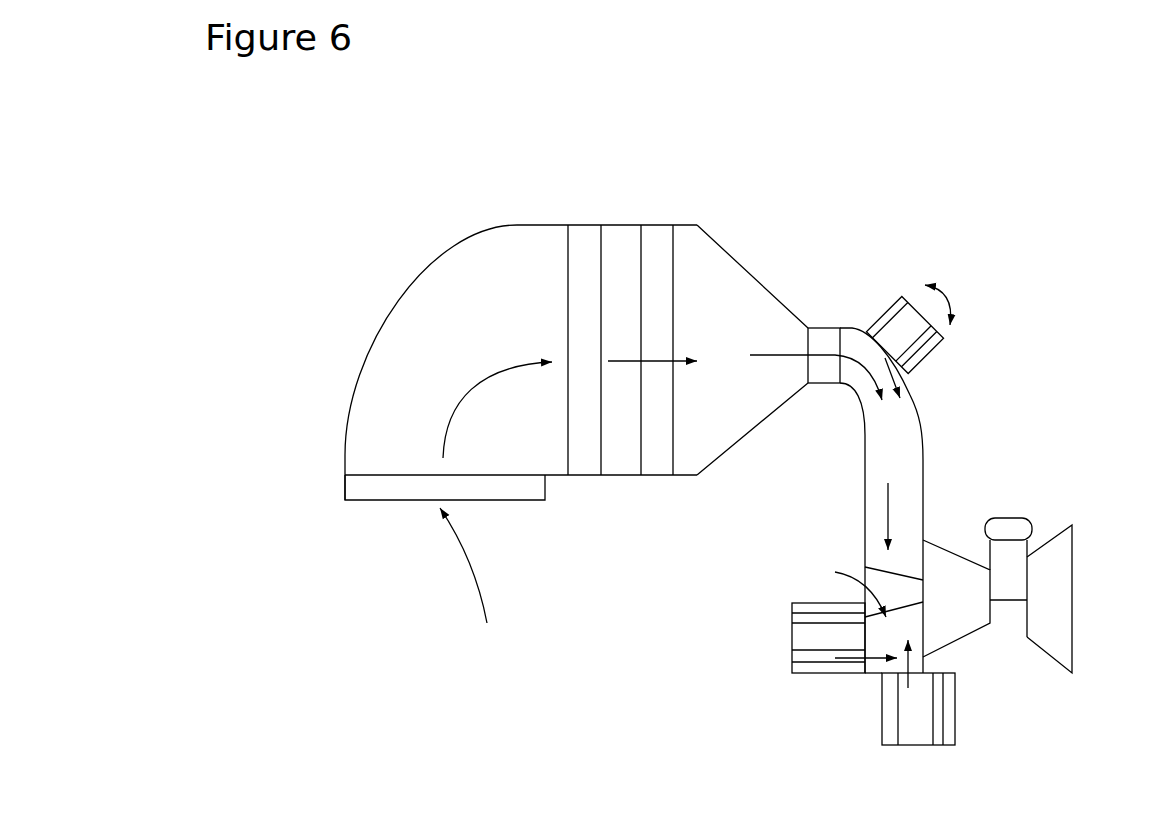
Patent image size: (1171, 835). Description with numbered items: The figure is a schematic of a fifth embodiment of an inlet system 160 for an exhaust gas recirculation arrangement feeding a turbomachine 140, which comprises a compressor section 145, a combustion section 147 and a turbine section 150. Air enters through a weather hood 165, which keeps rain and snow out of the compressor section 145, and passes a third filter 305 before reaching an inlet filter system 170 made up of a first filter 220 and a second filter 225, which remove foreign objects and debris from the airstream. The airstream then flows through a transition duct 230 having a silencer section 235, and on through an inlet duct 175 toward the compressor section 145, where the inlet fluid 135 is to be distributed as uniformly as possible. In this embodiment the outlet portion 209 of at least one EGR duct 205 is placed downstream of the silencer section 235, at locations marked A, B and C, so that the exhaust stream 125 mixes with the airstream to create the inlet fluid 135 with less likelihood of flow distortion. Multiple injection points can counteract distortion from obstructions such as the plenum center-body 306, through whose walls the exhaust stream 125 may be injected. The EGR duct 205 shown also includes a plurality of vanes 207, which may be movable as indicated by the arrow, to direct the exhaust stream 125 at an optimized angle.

The exhaust stream 125 is at (876, 523).
The inlet fluid 135 is at (747, 376).
The turbomachine 140 is at (1020, 687).
The compressor section 145 is at (936, 547).
The combustion section 147 is at (1010, 516).
The turbine section 150 is at (1073, 578).
The inlet system 160 is at (905, 187).
The weather hood 165 is at (360, 385).
The inlet filter system 170 is at (583, 512).
The inlet duct 175 is at (924, 450).
The EGR duct 205 is at (938, 352).
The vanes 207 is at (953, 308).
The outlet portion 209 is at (890, 306).
The first filter 220 is at (580, 223).
The second filter 225 is at (660, 223).
The transition duct 230 is at (722, 247).
The silencer section 235 is at (825, 383).
The third filter 305 is at (347, 501).
The plenum center-body 306 is at (883, 568).